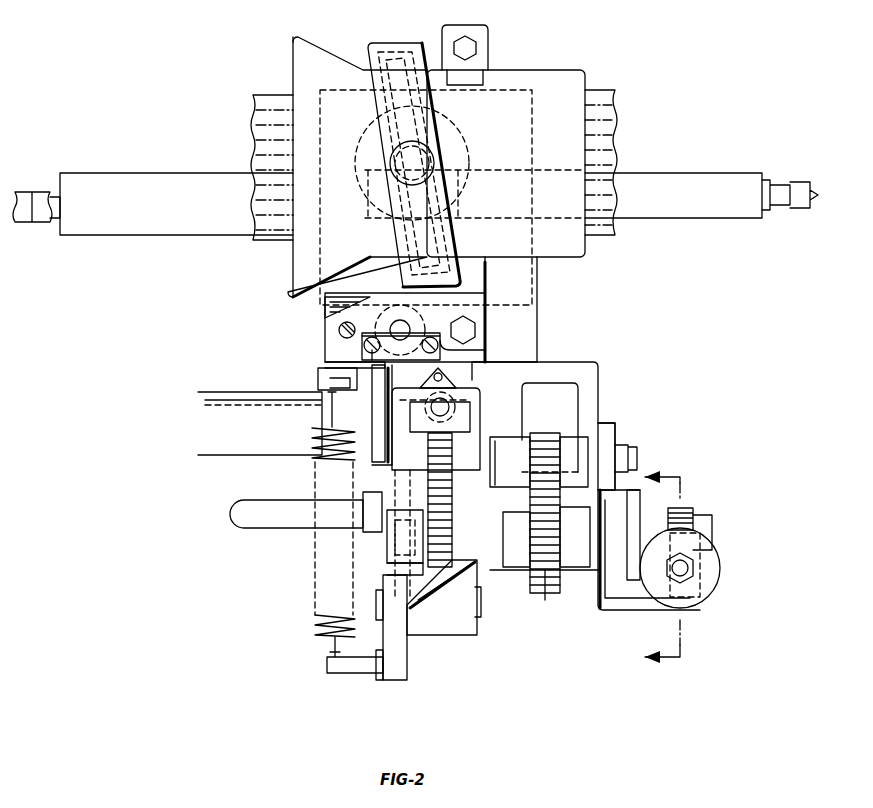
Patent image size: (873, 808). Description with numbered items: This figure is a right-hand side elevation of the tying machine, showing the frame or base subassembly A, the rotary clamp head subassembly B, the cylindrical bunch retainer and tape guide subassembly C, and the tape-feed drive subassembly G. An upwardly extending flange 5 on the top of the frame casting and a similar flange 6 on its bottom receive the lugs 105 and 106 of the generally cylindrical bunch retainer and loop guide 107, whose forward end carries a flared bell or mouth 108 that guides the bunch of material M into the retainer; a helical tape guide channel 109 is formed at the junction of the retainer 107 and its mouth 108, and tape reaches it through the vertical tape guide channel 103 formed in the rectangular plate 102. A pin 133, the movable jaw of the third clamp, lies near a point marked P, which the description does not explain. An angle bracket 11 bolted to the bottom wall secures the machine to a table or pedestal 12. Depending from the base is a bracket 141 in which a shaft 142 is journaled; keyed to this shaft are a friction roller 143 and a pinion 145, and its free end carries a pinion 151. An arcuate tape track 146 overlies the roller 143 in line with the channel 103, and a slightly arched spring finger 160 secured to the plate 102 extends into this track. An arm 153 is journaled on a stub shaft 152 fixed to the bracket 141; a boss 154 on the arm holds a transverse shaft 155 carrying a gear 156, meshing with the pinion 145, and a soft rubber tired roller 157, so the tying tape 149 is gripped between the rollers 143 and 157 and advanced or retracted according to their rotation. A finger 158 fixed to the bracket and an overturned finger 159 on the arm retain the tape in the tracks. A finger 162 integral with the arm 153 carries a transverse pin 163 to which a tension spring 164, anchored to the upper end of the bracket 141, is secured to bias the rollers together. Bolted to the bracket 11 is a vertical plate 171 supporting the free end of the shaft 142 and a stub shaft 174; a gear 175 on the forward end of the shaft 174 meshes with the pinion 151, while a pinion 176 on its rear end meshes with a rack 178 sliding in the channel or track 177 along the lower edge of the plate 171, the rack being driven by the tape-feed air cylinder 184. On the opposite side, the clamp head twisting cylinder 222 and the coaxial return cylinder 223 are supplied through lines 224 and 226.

The flange 5 is at (480, 38).
The flange 6 is at (480, 352).
The angle bracket 11 is at (598, 368).
The pedestal 12 is at (240, 392).
The rectangular plate 102 is at (325, 330).
The tape guide channel 103 is at (325, 316).
The lug 105 is at (482, 58).
The lug 106 is at (486, 305).
The bunch retainer and loop guide 107 is at (559, 73).
The bell or mouth 108 is at (300, 60).
The helical tape guide channel 109 is at (410, 40).
The pin 133 is at (410, 318).
The bracket 141 is at (322, 380).
The shaft 142 is at (637, 453).
The friction roller 143 is at (400, 480).
The pinion 145 is at (441, 444).
The tape track 146 is at (358, 454).
The tying tape 149 is at (387, 45).
The pinion 151 is at (545, 433).
The stub shaft 152 is at (481, 607).
The arm 153 is at (452, 600).
The boss 154 is at (490, 505).
The transverse shaft 155 is at (280, 528).
The gear 156 is at (453, 550).
The roller 157 is at (387, 545).
The finger 158 is at (395, 566).
The overturned finger 159 is at (398, 427).
The spring finger 160 is at (385, 362).
The finger 162 is at (393, 680).
The pin 163 is at (533, 380).
The tension spring 164 is at (315, 590).
The plate 171 is at (612, 430).
The stub shaft 174 is at (712, 535).
The gear 175 is at (547, 593).
The pinion 176 is at (688, 515).
The channel or track 177 is at (640, 610).
The rack 178 is at (715, 590).
The tape-feed air cylinder 184 is at (722, 568).
The tape clamp head twisting cylinder 222 is at (200, 152).
The untwisting or return cylinder 223 is at (715, 160).
The line 224 is at (22, 190).
The line 226 is at (800, 182).
The frame or base subassembly A is at (538, 332).
The rotary clamp head subassembly B is at (455, 140).
The bunch retainer and tape guide subassembly C is at (597, 74).
The tape-feed drive subassembly G is at (748, 553).
The bunch of material M is at (265, 108).
The point P is at (420, 300).